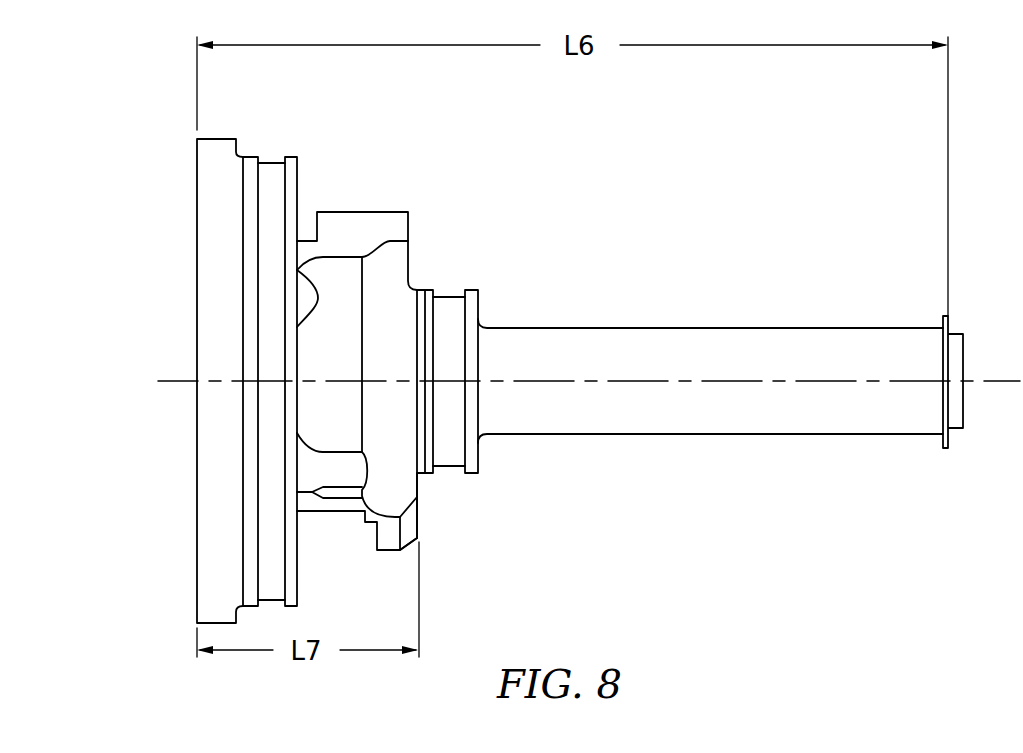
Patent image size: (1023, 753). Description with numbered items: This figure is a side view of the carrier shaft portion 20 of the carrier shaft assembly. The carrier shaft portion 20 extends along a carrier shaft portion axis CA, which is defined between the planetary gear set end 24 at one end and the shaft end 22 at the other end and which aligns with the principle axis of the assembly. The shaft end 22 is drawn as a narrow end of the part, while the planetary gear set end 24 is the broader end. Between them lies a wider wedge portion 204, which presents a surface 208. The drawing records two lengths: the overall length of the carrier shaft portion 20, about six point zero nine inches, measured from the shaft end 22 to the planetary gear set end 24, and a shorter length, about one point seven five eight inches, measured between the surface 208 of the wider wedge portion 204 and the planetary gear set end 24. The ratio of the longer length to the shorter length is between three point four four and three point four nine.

The carrier shaft portion 20 is at (108, 107).
The shaft end 22 is at (957, 333).
The planetary gear set end 24 is at (196, 210).
The wider wedge portion 204 is at (418, 525).
The surface 208 is at (418, 502).
The carrier shaft portion axis CA is at (178, 380).